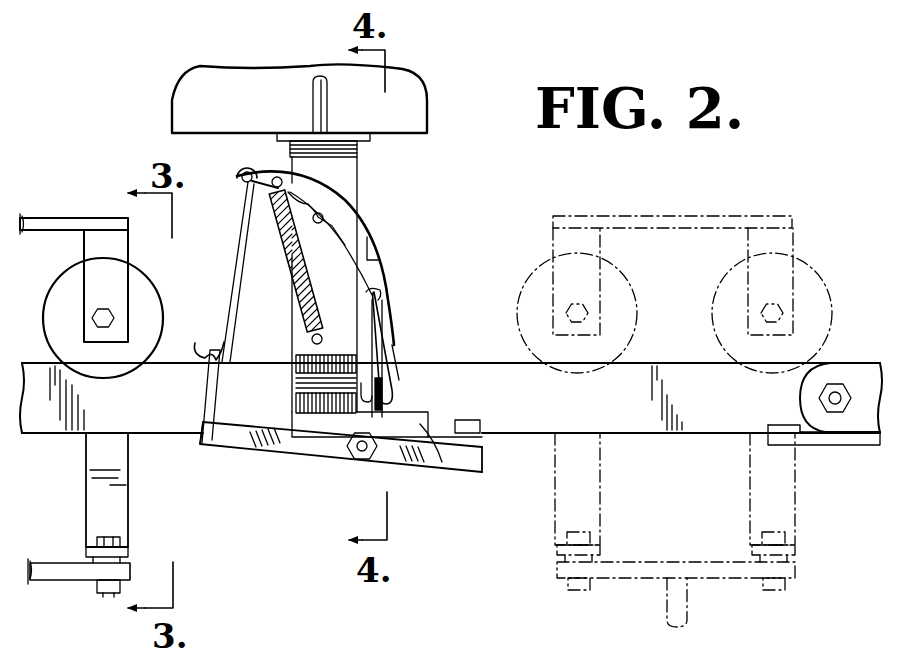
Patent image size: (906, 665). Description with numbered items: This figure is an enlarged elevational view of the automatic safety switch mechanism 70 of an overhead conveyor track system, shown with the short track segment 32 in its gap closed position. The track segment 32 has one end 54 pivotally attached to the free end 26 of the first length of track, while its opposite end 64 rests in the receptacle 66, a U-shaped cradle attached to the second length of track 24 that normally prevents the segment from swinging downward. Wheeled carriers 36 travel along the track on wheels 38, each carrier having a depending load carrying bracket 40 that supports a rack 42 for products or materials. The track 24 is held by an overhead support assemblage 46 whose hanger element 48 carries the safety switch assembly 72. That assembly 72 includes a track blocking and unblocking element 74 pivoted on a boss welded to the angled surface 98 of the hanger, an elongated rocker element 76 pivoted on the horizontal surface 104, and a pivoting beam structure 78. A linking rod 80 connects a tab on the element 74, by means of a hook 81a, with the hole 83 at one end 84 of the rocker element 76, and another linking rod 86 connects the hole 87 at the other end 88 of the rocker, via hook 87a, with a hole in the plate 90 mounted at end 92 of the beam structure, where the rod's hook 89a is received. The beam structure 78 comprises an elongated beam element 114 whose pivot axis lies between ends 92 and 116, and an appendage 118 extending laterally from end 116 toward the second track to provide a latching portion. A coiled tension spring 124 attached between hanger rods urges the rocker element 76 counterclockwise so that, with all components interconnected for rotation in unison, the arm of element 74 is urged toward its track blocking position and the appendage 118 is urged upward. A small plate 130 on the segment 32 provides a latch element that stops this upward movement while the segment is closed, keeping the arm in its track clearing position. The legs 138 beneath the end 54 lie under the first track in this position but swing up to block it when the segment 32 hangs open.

The second length of track 24 is at (160, 434).
The free end of first track 26 is at (846, 376).
The track segment 32 is at (712, 420).
The wheeled carrier 36 is at (58, 218).
The wheel 38 is at (66, 277).
The load carrying bracket 40 is at (95, 507).
The support rack 42 is at (66, 580).
The overhead support assemblage 46 is at (300, 157).
The hanger element 48 is at (358, 176).
The end of track segment 54 is at (781, 432).
The end of track segment 64 is at (410, 378).
The receptacle 66 is at (428, 445).
The automatic safety switch mechanism 70 is at (430, 186).
The safety switch assembly 72 is at (409, 240).
The track blocking and unblocking element 74 is at (372, 240).
The rocker element 76 is at (352, 243).
The pivoting beam structure 78 is at (316, 449).
The linking rod 80 is at (389, 336).
The hook 81a is at (392, 392).
The hole 83 is at (367, 292).
The end of rocker element 84 is at (376, 272).
The linking rod 86 is at (236, 256).
The hole 87 is at (240, 177).
The hook 87a is at (248, 192).
The end of rocker element 88 is at (246, 164).
The hook 89a is at (221, 345).
The plate 90 is at (212, 399).
The end of beam structure 92 is at (225, 446).
The angled surface 98 is at (300, 372).
The horizontal surface 104 is at (342, 158).
The beam element 114 is at (386, 453).
The end of beam element 116 is at (478, 462).
The appendage 118 is at (483, 440).
The coiled tension spring 124 is at (297, 291).
The plate 130 is at (475, 427).
The leg 138 is at (870, 436).